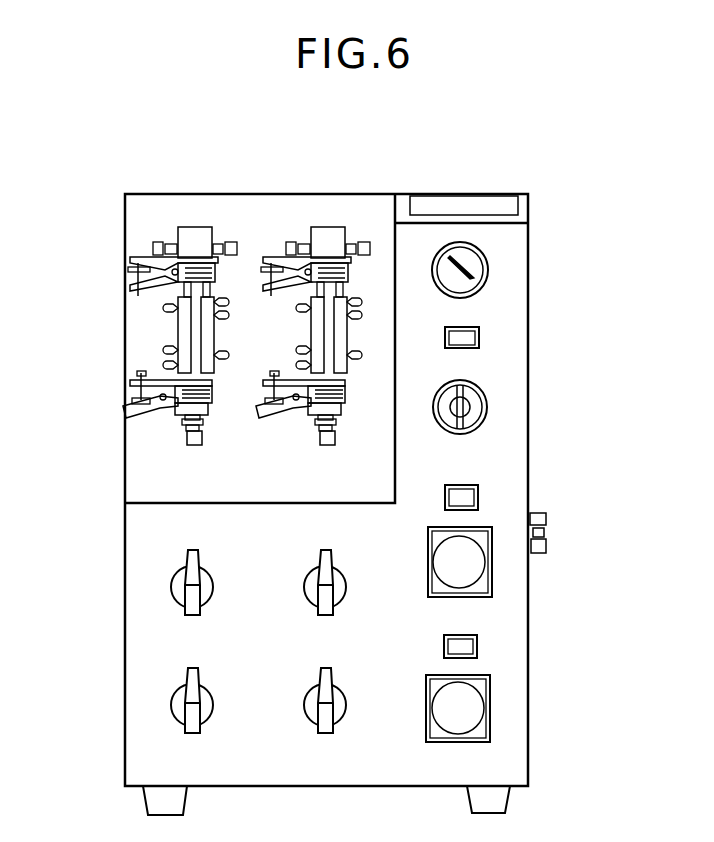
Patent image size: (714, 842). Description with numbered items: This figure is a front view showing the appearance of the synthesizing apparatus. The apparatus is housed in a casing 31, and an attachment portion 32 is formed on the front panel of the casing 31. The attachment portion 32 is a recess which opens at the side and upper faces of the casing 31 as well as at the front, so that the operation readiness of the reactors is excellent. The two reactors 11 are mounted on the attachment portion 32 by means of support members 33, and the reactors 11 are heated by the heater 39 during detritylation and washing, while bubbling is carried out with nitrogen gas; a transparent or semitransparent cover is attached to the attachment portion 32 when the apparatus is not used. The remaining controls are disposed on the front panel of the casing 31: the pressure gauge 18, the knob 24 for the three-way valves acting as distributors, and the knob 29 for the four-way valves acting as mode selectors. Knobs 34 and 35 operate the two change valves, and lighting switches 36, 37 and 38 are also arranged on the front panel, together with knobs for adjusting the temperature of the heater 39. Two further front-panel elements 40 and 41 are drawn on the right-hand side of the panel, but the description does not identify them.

The reactor 11 is at (318, 380).
The pressure gauge 18 is at (489, 279).
The knob 24 is at (205, 578).
The knob 29 is at (205, 700).
The casing 31 is at (122, 502).
The attachment portion 32 is at (145, 470).
The support member 33 is at (176, 312).
The knob 34 is at (340, 579).
The knob 35 is at (335, 695).
The lighting switch 36 is at (473, 340).
The lighting switch 37 is at (473, 497).
The lighting switch 38 is at (470, 647).
The heater 39 is at (310, 342).
The push button switch 40 is at (478, 570).
The push button switch 41 is at (478, 713).